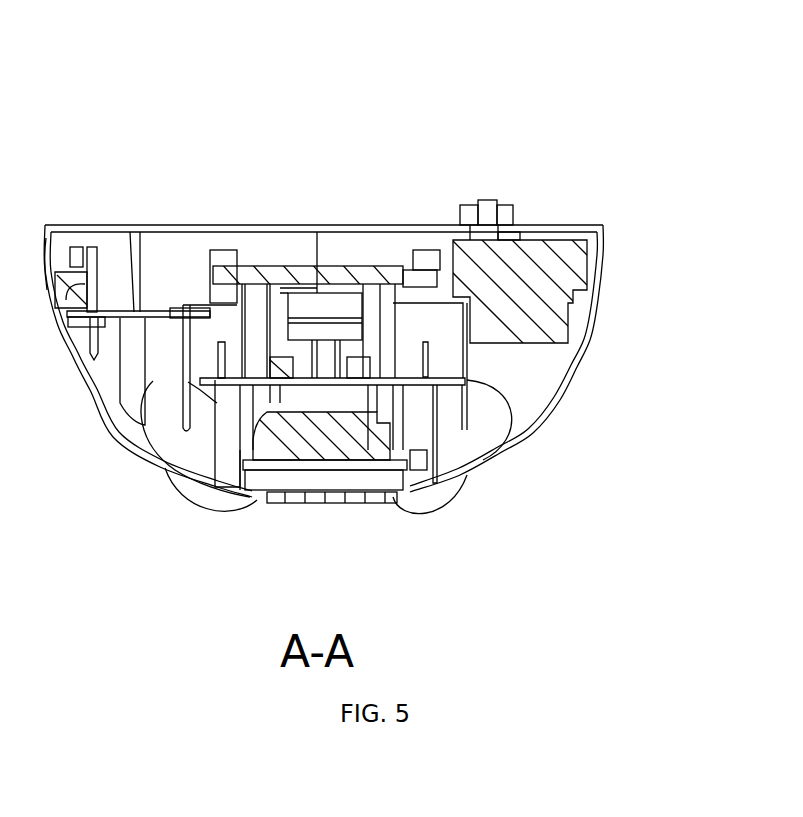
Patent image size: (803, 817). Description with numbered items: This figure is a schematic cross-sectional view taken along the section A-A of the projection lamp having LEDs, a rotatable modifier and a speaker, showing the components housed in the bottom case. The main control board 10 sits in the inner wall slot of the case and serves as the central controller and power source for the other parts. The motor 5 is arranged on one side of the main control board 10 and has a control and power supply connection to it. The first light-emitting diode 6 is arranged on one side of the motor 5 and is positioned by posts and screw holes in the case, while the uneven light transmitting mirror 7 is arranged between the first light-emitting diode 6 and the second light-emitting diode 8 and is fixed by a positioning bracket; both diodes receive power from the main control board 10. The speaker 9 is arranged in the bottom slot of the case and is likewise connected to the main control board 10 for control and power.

The motor 5 is at (523, 343).
The first light-emitting diode 6 is at (348, 262).
The uneven light transmitting mirror 7 is at (240, 272).
The second light-emitting diode 8 is at (343, 297).
The speaker 9 is at (320, 483).
The main control board 10 is at (165, 308).